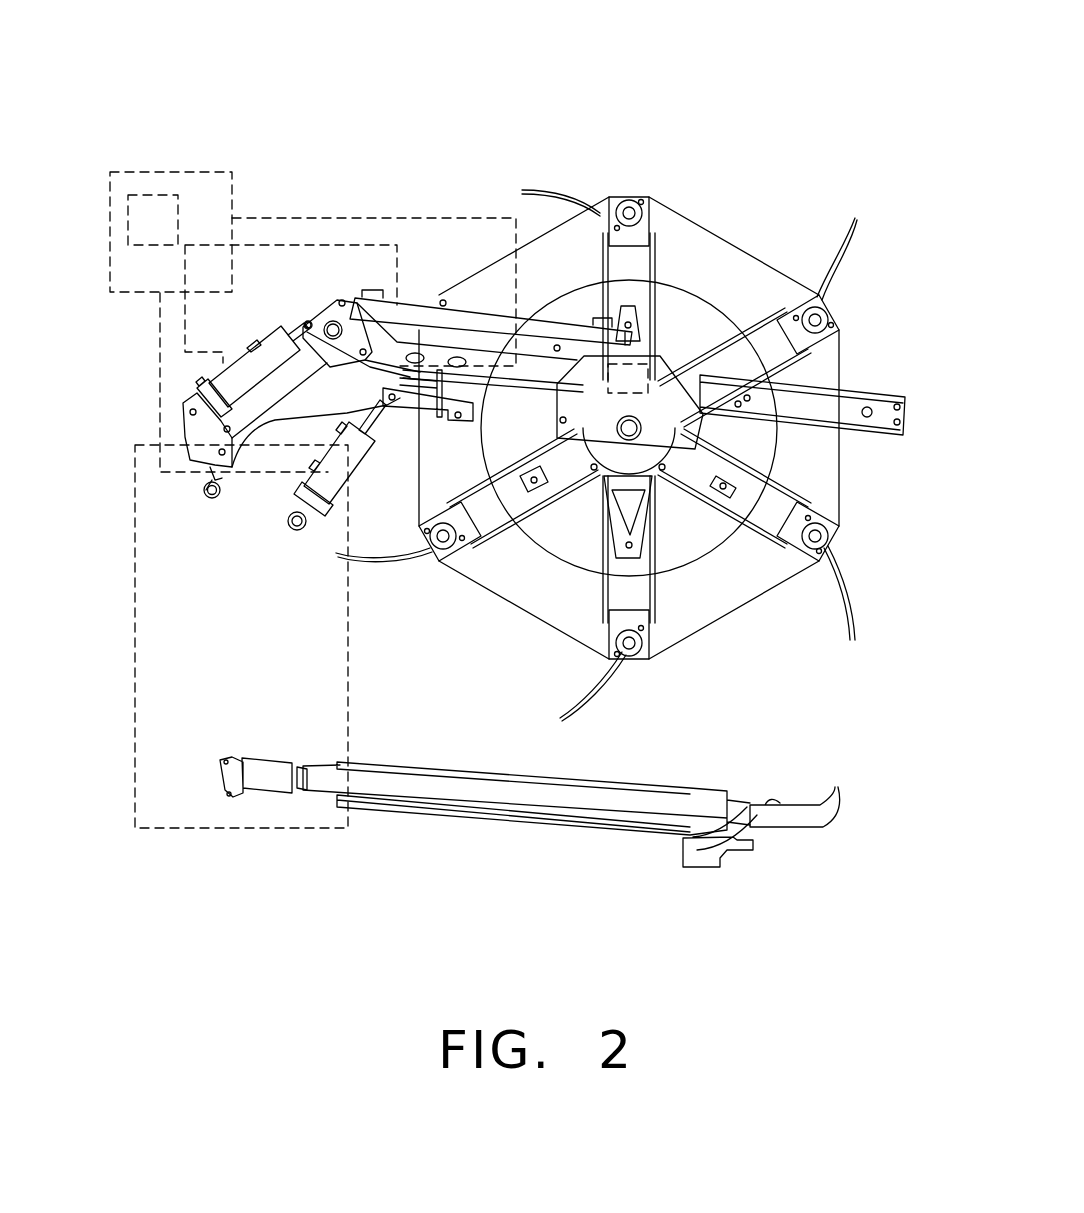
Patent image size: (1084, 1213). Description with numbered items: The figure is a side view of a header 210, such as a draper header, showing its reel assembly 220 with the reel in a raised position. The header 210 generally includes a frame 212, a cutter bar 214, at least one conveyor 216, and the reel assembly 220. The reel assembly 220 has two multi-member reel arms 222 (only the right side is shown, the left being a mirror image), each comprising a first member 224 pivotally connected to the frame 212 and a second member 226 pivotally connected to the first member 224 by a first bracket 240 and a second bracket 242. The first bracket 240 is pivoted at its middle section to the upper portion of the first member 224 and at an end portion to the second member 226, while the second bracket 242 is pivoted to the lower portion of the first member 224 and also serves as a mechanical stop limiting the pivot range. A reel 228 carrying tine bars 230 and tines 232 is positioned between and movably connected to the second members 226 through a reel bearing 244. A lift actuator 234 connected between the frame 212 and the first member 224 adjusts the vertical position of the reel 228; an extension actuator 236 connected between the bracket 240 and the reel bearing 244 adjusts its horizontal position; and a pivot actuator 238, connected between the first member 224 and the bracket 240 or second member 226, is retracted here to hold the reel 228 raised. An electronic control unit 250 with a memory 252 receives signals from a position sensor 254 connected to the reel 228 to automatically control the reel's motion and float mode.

The header 210 is at (822, 147).
The frame 212 is at (135, 690).
The cutter bar 214 is at (841, 812).
The conveyor 216 is at (517, 772).
The reel assembly 220 is at (361, 273).
The reel arm 222 is at (292, 419).
The first member 224 is at (185, 432).
The second member 226 is at (882, 392).
The reel 228 is at (826, 488).
The tine bar 230 is at (631, 194).
The tine 232 is at (552, 188).
The lift actuator 234 is at (360, 470).
The extension actuator 236 is at (497, 320).
The pivot actuator 238 is at (196, 376).
The first bracket 240 is at (326, 305).
The second bracket 242 is at (462, 414).
The reel bearing 244 is at (672, 347).
The electronic control unit 250 is at (150, 172).
The memory 252 is at (128, 218).
The position sensor 254 is at (652, 352).